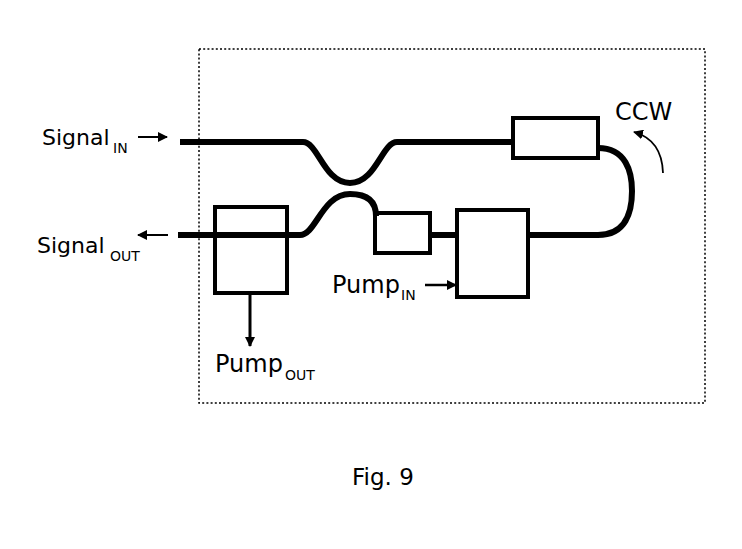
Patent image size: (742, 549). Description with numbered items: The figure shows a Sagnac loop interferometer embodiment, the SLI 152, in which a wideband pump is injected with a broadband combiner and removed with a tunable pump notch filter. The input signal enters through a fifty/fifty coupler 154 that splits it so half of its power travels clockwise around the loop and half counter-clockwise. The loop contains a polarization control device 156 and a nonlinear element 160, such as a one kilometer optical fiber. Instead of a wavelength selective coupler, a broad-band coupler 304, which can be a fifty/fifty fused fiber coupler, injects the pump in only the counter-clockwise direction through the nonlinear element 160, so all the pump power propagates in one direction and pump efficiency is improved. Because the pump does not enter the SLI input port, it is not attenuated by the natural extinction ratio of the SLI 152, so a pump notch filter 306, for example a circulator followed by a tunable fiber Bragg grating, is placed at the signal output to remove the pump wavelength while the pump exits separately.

The SLI 152 is at (452, 213).
The 50/50 coupler 154 is at (346, 176).
The polarization control device 156 is at (416, 217).
The nonlinear element 160 is at (555, 125).
The broad-band coupler 304 is at (492, 241).
The pump notch filter 306 is at (232, 237).